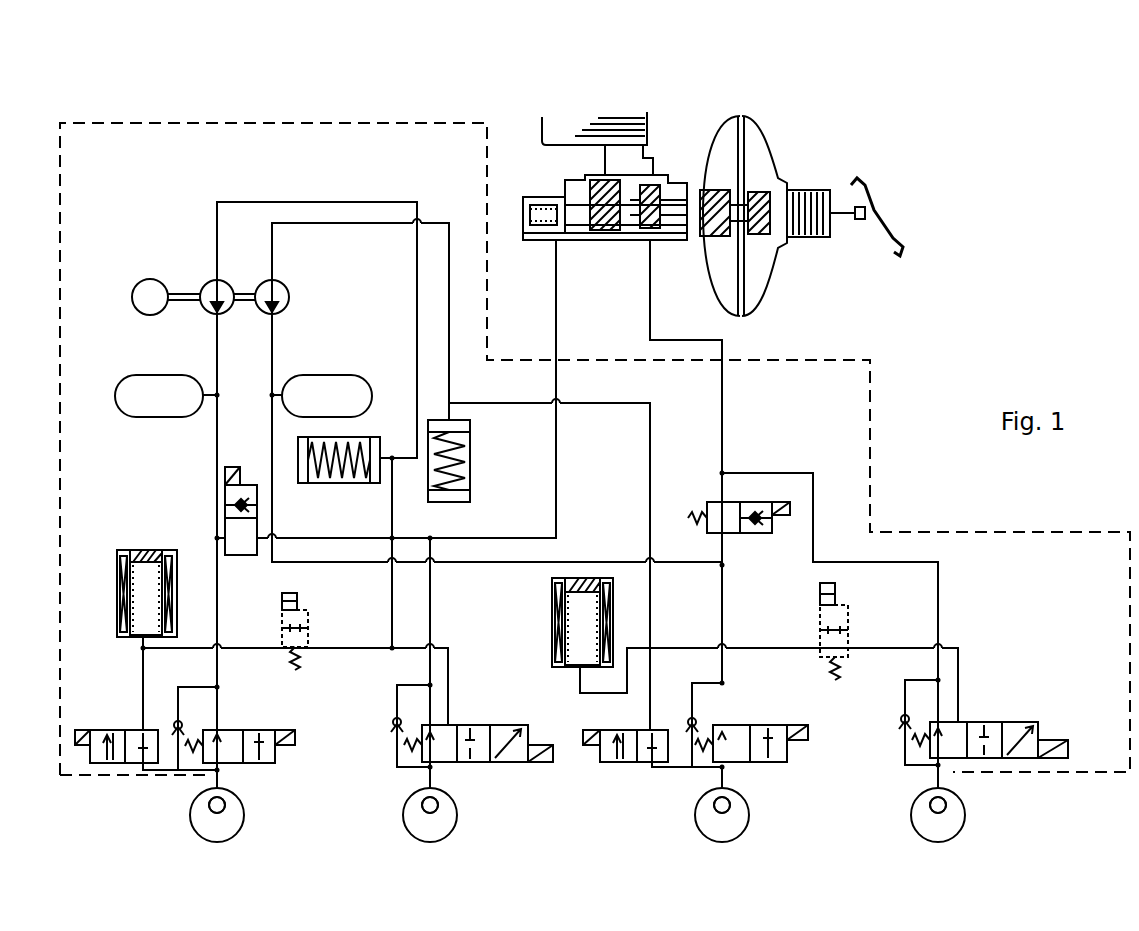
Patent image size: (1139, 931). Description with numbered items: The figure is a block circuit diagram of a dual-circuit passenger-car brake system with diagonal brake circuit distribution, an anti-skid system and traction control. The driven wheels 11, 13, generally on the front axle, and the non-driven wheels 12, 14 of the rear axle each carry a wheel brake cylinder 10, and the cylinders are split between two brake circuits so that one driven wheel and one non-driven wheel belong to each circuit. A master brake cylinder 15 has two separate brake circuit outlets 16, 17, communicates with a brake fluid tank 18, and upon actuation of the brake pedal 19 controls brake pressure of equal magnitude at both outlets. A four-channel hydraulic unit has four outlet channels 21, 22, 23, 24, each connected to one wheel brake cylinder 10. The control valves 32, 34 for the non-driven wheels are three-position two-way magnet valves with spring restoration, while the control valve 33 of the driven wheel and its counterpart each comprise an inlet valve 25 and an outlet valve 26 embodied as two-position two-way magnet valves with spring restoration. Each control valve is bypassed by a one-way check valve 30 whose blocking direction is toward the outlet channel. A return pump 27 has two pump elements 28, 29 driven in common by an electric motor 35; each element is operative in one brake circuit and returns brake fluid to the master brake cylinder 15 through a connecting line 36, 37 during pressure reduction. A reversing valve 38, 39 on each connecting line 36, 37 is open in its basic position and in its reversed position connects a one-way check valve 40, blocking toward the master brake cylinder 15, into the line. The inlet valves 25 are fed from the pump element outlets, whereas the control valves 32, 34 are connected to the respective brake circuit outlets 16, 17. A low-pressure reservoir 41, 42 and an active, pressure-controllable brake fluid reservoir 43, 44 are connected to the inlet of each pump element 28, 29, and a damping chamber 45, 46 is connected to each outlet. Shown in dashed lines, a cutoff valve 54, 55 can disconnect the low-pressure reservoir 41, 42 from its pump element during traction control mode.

The wheel brake cylinder 10 is at (208, 806).
The driven wheel 11 is at (235, 825).
The non-driven wheel 12 is at (445, 822).
The driven wheel 13 is at (737, 820).
The non-driven wheel 14 is at (955, 820).
The master brake cylinder 15 is at (683, 188).
The brake circuit outlet 16 is at (557, 240).
The brake circuit outlet 17 is at (650, 240).
The brake fluid tank 18 is at (565, 125).
The brake pedal 19 is at (876, 252).
The outlet channel 21 is at (222, 771).
The outlet channel 22 is at (435, 768).
The outlet channel 23 is at (727, 767).
The outlet channel 24 is at (943, 768).
The inlet valve 25 is at (265, 738).
The outlet valve 26 is at (120, 735).
The return pump 27 is at (240, 270).
The pump element 28 is at (210, 311).
The pump element 29 is at (280, 311).
The one-way check valve 30 is at (177, 720).
The control valve 32 is at (468, 708).
The control valve 33 is at (743, 718).
The control valve 34 is at (978, 712).
The electric motor 35 is at (168, 292).
The connecting line 36 is at (558, 338).
The connecting line 37 is at (722, 407).
The reversing valve 38 is at (238, 555).
The reversing valve 39 is at (735, 533).
The one-way check valve 40 is at (491, 527).
The low-pressure reservoir 41 is at (344, 460).
The low-pressure reservoir 42 is at (486, 453).
The brake fluid reservoir 43 is at (115, 562).
The brake fluid reservoir 44 is at (573, 581).
The damping chamber 45 is at (128, 410).
The damping chamber 46 is at (345, 382).
The cutoff valve 54 is at (312, 627).
The cutoff valve 55 is at (848, 625).